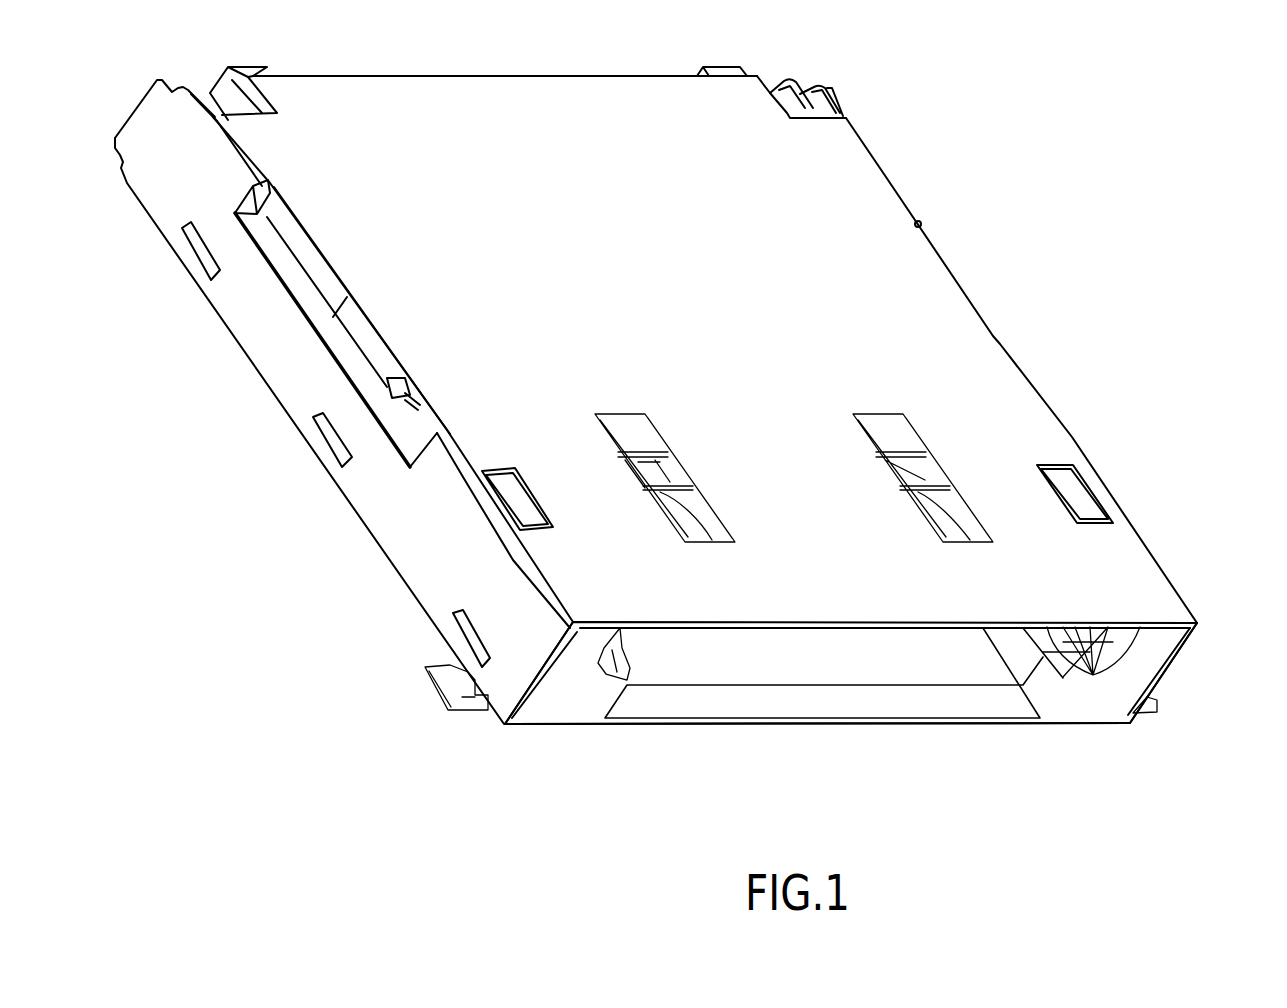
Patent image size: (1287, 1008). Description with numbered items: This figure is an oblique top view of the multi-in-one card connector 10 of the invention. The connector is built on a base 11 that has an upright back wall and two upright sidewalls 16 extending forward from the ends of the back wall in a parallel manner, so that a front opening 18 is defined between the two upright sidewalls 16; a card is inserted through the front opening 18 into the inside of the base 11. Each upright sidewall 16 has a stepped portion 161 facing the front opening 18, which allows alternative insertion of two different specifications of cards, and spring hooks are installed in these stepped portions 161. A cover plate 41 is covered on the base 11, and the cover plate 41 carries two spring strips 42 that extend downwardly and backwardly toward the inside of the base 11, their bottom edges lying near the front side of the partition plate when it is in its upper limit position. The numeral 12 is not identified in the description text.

The multi-in-one card connector 10 is at (243, 524).
The base 11 is at (554, 726).
The bottom wall 12 is at (962, 725).
The upright sidewall 16 is at (555, 677).
The stepped portion 161 is at (617, 668).
The front opening 18 is at (823, 662).
The cover plate 41 is at (907, 279).
The spring strip 42 is at (937, 498).